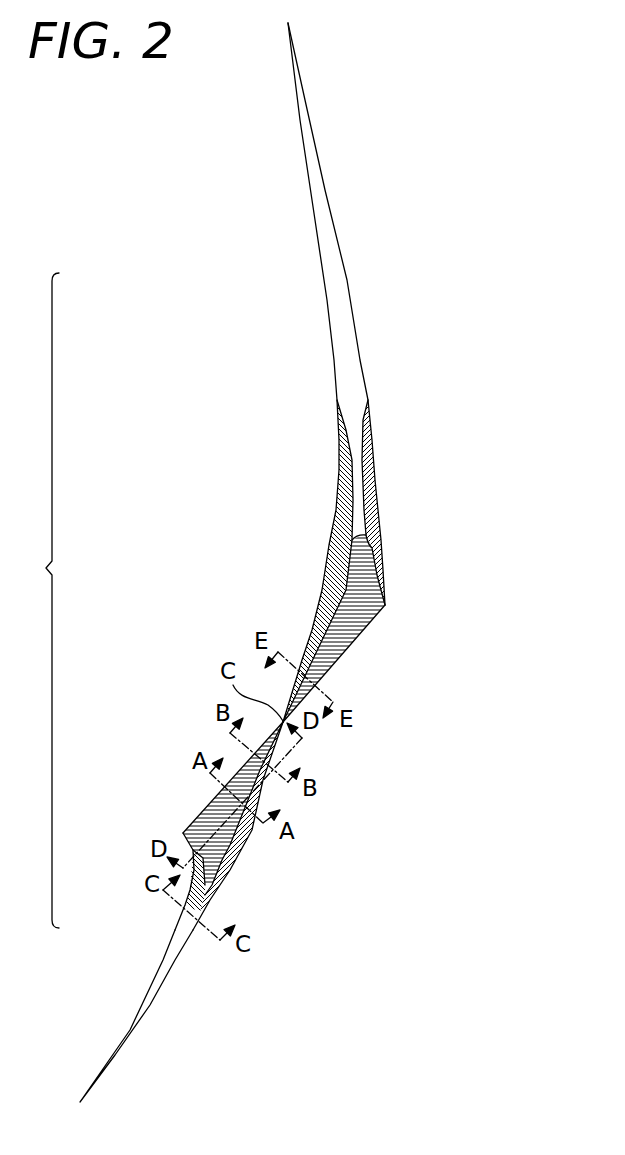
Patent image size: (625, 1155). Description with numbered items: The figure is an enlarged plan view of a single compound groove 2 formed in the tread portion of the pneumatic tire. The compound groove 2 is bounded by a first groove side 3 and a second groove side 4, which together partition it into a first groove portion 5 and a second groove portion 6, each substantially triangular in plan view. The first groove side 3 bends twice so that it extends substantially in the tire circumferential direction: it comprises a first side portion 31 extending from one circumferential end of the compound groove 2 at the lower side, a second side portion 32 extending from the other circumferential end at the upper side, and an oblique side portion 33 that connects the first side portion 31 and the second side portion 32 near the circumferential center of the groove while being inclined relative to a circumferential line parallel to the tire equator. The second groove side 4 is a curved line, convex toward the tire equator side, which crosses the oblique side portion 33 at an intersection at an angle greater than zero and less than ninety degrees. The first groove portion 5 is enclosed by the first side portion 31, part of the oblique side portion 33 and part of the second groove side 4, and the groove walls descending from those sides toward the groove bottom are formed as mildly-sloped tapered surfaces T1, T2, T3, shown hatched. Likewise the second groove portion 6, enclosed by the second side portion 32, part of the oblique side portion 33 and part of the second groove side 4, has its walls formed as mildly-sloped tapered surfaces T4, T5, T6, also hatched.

The compound groove 2 is at (263, 545).
The first groove side 3 is at (41, 600).
The second groove side 4 is at (330, 343).
The first groove portion 5 is at (145, 1002).
The second groove portion 6 is at (350, 362).
The first side portion 31 is at (136, 996).
The second side portion 32 is at (260, 372).
The oblique side portion 33 is at (189, 831).
The tapered surface T1 is at (205, 827).
The tapered surface T2 is at (220, 898).
The tapered surface T3 is at (235, 835).
The tapered surface T4 is at (360, 608).
The tapered surface T5 is at (372, 495).
The tapered surface T6 is at (338, 512).